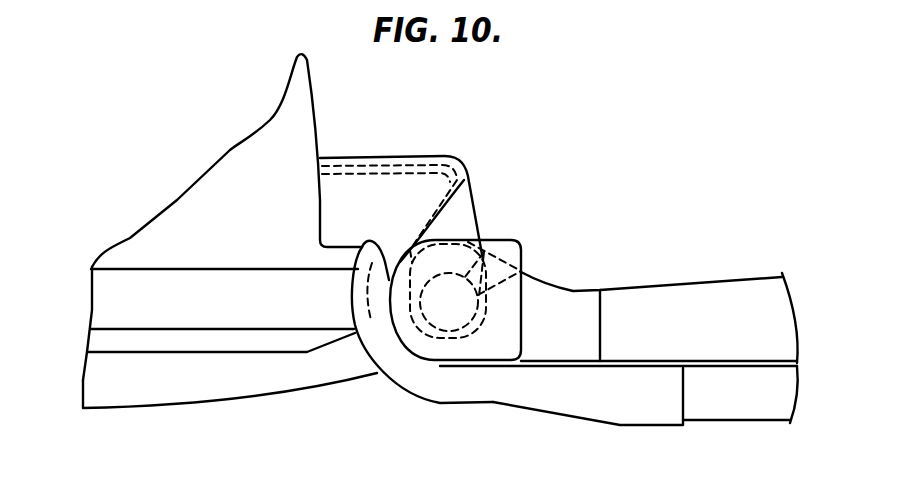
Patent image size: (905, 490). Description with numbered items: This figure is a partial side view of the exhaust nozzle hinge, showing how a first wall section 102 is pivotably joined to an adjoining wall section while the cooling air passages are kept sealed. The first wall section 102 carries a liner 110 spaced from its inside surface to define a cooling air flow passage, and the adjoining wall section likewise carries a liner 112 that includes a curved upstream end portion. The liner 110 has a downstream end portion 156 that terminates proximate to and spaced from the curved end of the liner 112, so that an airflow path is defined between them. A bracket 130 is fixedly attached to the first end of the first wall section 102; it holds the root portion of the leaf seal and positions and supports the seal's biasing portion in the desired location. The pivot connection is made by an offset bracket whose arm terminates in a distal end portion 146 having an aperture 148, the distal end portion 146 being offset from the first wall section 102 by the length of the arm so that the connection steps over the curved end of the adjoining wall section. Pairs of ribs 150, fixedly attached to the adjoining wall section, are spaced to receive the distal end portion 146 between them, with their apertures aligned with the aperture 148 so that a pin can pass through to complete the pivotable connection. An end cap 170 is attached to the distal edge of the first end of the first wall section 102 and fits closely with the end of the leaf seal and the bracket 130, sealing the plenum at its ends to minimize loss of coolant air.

The first wall section 102 is at (133, 236).
The liner 110 is at (170, 410).
The liner 112 is at (547, 412).
The bracket 130 is at (433, 156).
The distal end portion 146 is at (522, 272).
The aperture 148 is at (486, 256).
The ribs 150 is at (652, 284).
The downstream end portion 156 is at (377, 374).
The end cap 170 is at (366, 156).